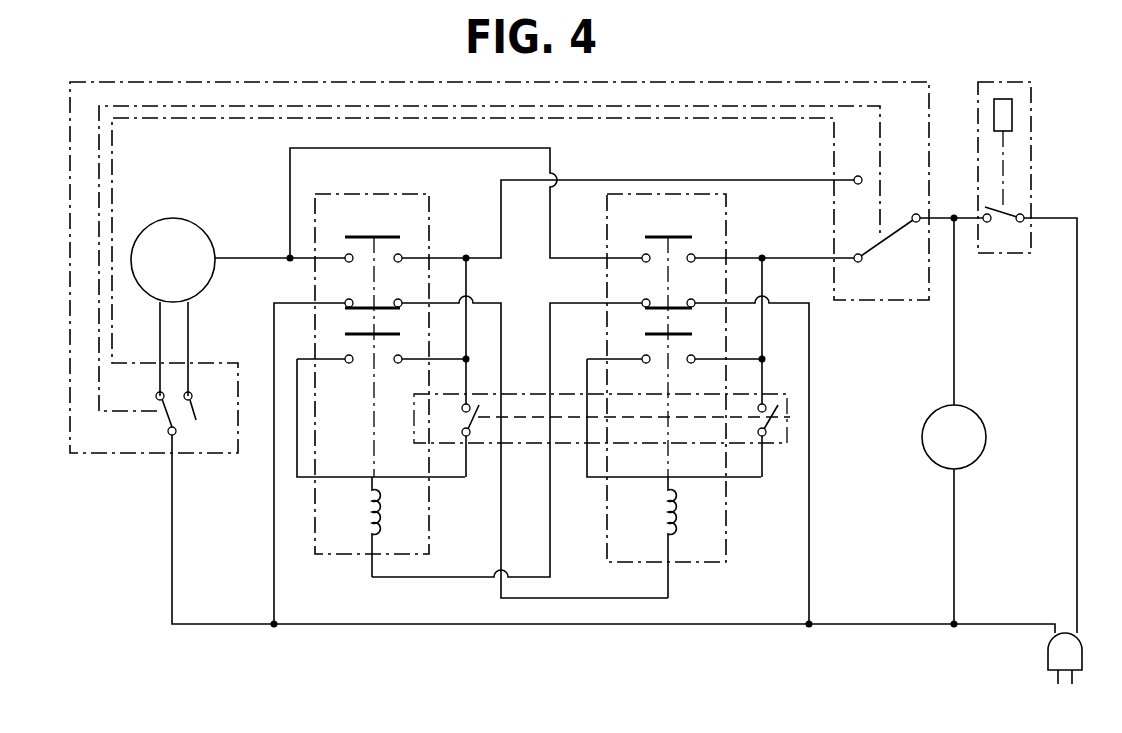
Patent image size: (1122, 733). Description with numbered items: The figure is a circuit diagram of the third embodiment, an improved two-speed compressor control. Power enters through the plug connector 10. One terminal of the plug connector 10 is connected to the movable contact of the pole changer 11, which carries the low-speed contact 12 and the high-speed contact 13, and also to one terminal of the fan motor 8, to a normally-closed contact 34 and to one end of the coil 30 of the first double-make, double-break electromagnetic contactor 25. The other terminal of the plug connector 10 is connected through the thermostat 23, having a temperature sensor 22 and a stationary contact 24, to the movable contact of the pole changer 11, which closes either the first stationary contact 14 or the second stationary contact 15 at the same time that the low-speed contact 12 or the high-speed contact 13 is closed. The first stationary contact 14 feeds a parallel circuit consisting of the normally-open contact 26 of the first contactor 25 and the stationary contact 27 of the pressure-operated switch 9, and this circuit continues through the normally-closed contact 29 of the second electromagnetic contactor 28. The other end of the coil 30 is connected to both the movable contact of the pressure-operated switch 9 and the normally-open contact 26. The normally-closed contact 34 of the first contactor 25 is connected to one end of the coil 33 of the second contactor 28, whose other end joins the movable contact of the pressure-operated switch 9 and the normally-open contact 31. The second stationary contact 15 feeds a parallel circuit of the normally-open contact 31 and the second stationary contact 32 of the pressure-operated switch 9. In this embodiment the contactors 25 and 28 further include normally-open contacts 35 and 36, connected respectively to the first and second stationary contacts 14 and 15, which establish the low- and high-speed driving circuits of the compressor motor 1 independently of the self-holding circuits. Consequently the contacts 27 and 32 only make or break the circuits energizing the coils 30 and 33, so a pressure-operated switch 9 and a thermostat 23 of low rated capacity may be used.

The compressor motor 1 is at (173, 218).
The fan motor 8 is at (938, 410).
The pressure-operated switch 9 is at (779, 412).
The plug connector 10 is at (1048, 656).
The pole changer 11 is at (841, 82).
The low-speed contact 12 is at (156, 395).
The high-speed contact 13 is at (198, 420).
The first stationary contact 14 is at (862, 261).
The second stationary contact 15 is at (858, 176).
The temperature sensor 22 is at (1012, 110).
The thermostat 23 is at (1031, 148).
The stationary contact 24 is at (990, 222).
The first electromagnetic contactor 25 is at (726, 487).
The normally-open contact 26 is at (693, 355).
The stationary contact 27 is at (765, 403).
The second electromagnetic contactor 28 is at (325, 556).
The normally-closed contact 29 is at (348, 299).
The coil 30 is at (678, 505).
The normally-open contact 31 is at (349, 363).
The second stationary contact 32 is at (468, 436).
The coil 33 is at (380, 508).
The normally-closed contact 34 is at (606, 297).
The normally-open contact 35 is at (693, 254).
The normally-open contact 36 is at (400, 254).